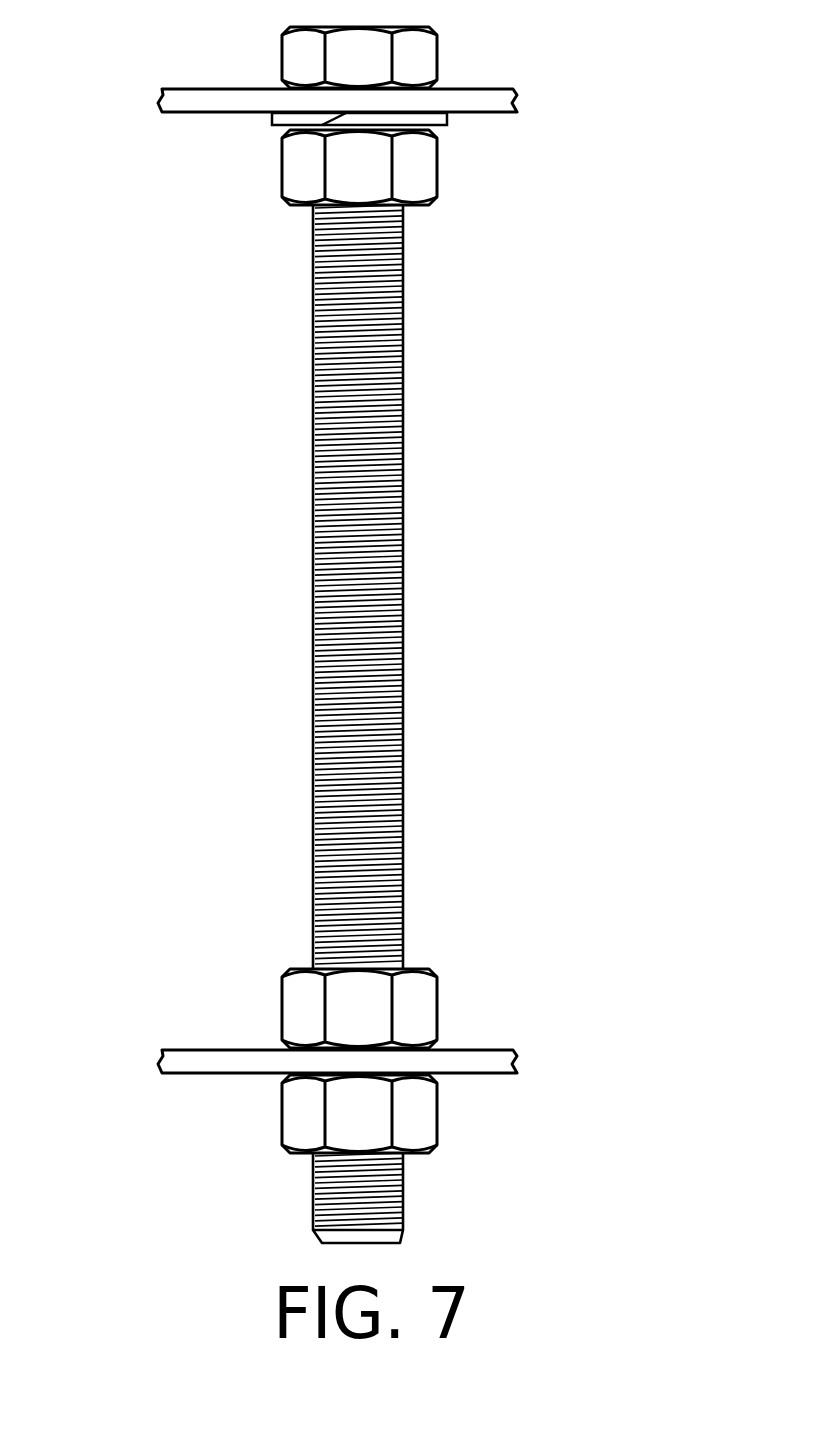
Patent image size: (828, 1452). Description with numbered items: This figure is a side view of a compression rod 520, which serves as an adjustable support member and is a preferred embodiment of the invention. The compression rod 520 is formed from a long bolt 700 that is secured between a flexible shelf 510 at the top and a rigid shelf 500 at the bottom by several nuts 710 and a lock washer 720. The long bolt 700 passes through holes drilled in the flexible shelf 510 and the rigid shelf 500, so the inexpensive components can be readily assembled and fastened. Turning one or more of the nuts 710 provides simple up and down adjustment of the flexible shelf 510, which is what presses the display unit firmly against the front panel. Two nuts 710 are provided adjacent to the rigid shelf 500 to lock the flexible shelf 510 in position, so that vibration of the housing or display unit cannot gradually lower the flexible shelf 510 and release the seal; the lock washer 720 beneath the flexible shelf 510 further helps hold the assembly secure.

The rigid shelf 500 is at (235, 1050).
The flexible shelf 510 is at (235, 113).
The compression rod 520 is at (391, 635).
The long bolt 700 is at (405, 385).
The nuts 710 is at (437, 163).
The lock washer 720 is at (447, 117).